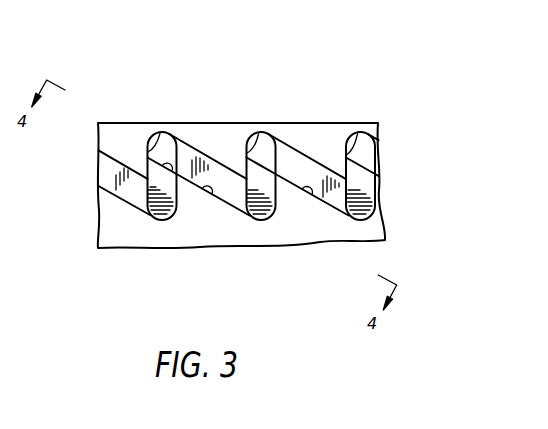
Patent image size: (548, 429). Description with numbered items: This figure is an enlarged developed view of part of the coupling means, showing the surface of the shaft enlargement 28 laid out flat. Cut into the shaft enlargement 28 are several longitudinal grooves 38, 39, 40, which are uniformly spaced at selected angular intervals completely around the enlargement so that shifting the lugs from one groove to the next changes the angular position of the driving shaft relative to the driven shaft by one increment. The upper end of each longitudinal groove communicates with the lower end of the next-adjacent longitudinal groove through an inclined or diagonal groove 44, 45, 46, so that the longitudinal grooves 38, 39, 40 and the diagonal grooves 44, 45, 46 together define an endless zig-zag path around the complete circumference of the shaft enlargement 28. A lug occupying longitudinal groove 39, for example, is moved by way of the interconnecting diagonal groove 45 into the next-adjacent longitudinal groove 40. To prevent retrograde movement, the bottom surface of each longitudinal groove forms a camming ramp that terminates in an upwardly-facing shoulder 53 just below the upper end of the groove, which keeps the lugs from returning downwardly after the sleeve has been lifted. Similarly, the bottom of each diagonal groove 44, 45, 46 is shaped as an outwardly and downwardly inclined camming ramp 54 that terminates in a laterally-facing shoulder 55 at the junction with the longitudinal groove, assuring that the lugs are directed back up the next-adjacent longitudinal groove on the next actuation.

The shaft enlargement 28 is at (108, 225).
The longitudinal groove 38 is at (155, 131).
The longitudinal groove 39 is at (253, 130).
The longitudinal groove 40 is at (357, 132).
The diagonal groove 44 is at (212, 194).
The diagonal groove 45 is at (312, 195).
The diagonal groove 46 is at (354, 167).
The upwardly-facing shoulder 53 is at (172, 171).
The camming ramp 54 is at (187, 165).
The laterally-facing shoulder 55 is at (256, 196).